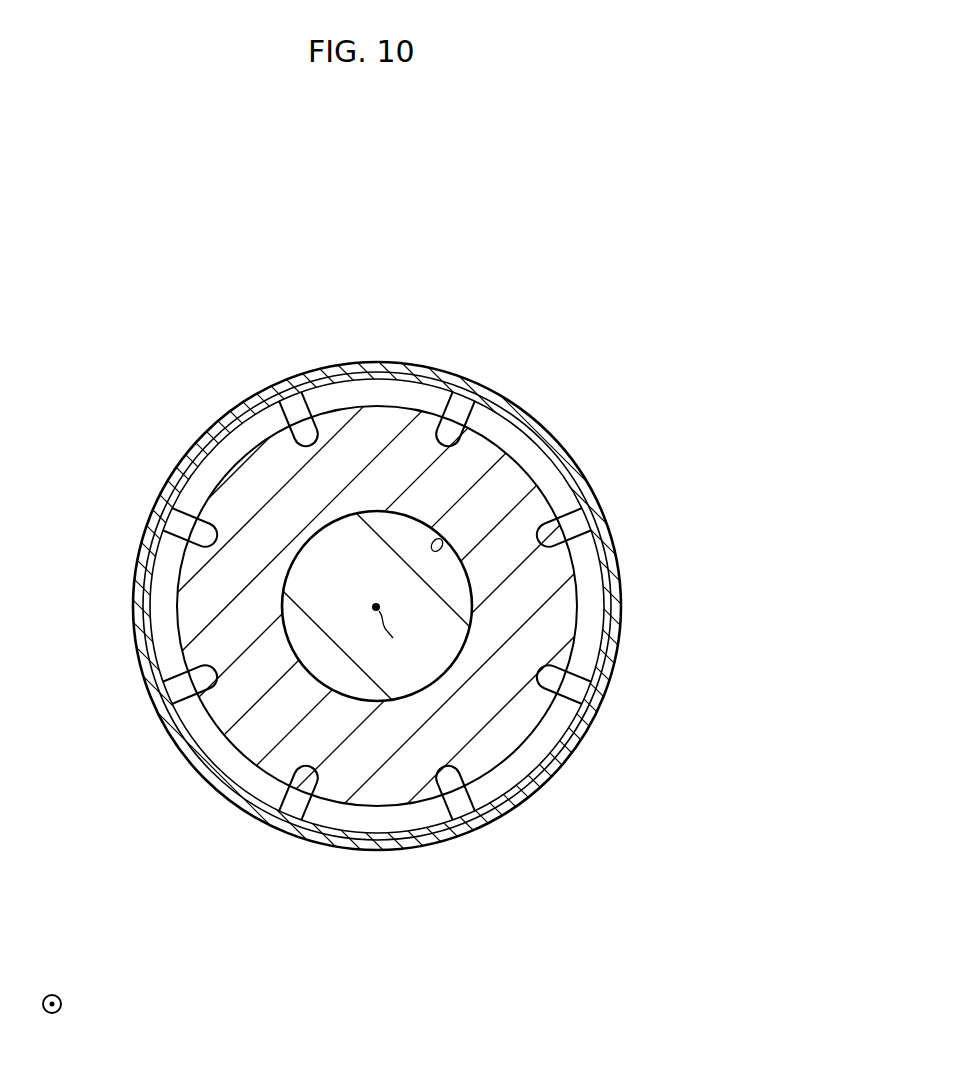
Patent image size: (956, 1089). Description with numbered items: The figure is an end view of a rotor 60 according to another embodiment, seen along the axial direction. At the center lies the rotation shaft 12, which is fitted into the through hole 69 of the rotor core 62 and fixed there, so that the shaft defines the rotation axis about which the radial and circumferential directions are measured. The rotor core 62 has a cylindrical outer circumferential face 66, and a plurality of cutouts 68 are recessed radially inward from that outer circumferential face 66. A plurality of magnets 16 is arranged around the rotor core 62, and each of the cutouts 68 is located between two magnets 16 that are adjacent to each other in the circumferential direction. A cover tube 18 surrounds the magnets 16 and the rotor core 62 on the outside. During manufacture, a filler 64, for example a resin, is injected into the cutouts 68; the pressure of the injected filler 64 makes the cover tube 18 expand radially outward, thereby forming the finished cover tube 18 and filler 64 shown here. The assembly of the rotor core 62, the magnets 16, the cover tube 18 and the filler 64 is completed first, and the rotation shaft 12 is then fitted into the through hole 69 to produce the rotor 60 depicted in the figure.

The rotor 60 is at (665, 264).
The cylindrical outer circumferential face 66 is at (187, 450).
The cover tube 18 is at (478, 385).
The magnets 16 is at (363, 398).
The rotor core 62 is at (479, 704).
The filler 64 is at (377, 568).
The cutouts 68 is at (320, 423).
The rotation shaft 12 is at (346, 579).
The through hole 69 is at (439, 548).